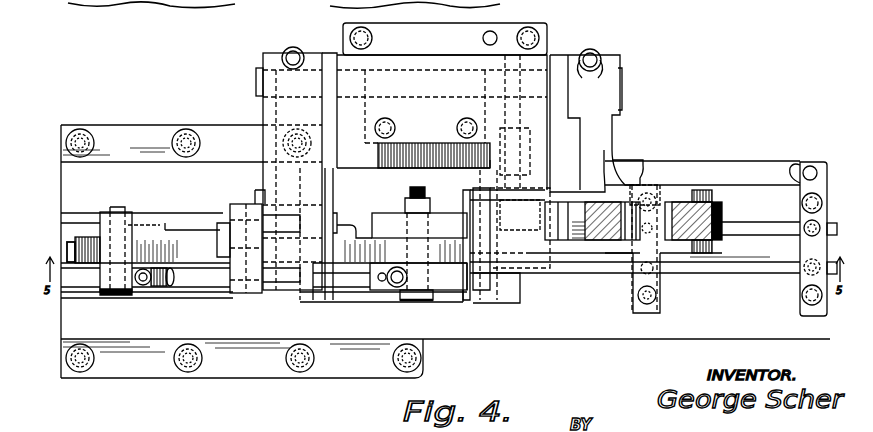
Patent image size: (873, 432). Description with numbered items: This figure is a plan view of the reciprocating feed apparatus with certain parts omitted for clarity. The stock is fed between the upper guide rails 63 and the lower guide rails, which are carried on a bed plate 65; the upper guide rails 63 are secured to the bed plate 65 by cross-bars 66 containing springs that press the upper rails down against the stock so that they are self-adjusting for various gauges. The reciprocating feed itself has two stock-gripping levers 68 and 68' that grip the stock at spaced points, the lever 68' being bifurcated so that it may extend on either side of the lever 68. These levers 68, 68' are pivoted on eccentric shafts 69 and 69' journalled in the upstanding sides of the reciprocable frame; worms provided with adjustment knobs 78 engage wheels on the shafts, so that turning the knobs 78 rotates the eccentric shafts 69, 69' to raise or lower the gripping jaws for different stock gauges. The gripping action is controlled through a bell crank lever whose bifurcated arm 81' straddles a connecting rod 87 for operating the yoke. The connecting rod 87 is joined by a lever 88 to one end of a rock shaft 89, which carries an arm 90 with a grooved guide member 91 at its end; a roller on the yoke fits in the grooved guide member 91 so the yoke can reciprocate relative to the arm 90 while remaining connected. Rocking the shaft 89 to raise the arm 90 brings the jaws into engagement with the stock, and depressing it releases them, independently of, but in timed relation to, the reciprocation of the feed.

The upper guide rails 63 is at (758, 228).
The bed plate 65 is at (724, 168).
The cross-bars 66 is at (799, 168).
The lever 68 is at (145, 225).
The lever 68' is at (365, 235).
The eccentric shaft 69 is at (147, 270).
The eccentric shaft 69' is at (429, 312).
The adjustment knobs 78 is at (163, 287).
The arm of bell crank lever 81' is at (596, 280).
The connecting rod 87 is at (612, 243).
The lever 88 is at (605, 140).
The rock shaft 89 is at (257, 84).
The arm 90 is at (265, 148).
The grooved guide member 91 is at (266, 236).